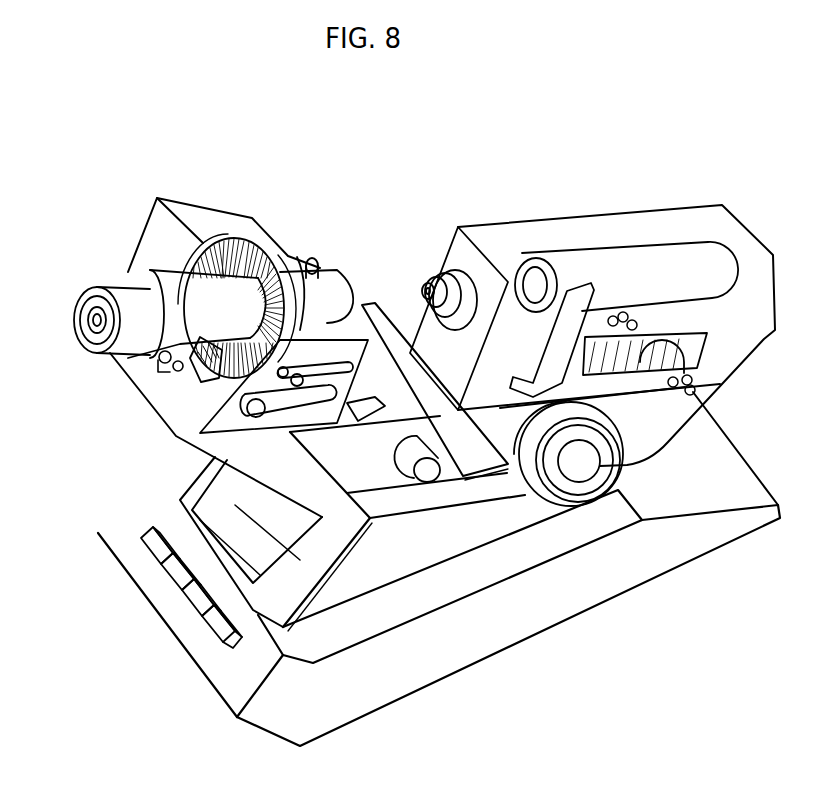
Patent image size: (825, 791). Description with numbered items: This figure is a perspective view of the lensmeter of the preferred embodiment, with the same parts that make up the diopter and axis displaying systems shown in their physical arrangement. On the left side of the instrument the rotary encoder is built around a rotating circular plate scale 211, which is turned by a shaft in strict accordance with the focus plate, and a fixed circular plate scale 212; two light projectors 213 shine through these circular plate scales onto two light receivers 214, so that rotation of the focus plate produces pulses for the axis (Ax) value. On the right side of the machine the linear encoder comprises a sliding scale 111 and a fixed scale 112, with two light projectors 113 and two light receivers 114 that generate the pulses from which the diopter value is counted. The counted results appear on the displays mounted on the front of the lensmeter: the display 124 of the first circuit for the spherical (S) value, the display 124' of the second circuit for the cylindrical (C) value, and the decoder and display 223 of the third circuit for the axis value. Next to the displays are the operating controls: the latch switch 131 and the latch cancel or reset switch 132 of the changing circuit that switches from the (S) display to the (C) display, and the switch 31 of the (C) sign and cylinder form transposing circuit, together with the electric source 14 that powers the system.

The rotating circular plate scale 211 is at (263, 252).
The light receivers 214 is at (300, 318).
The light projectors 213 is at (172, 370).
The fixed circular plate scale 212 is at (192, 373).
The display 124 is at (226, 534).
The display 124' is at (175, 518).
The decoder and display 223 is at (248, 523).
The electric source 14 is at (150, 550).
The switch 31 is at (172, 578).
The latch switch 131 is at (193, 607).
The latch cancel switch 132 is at (207, 635).
The light receivers 114 is at (640, 330).
The sliding scale 111 is at (764, 339).
The fixed scale 112 is at (700, 358).
The light projectors 113 is at (690, 400).